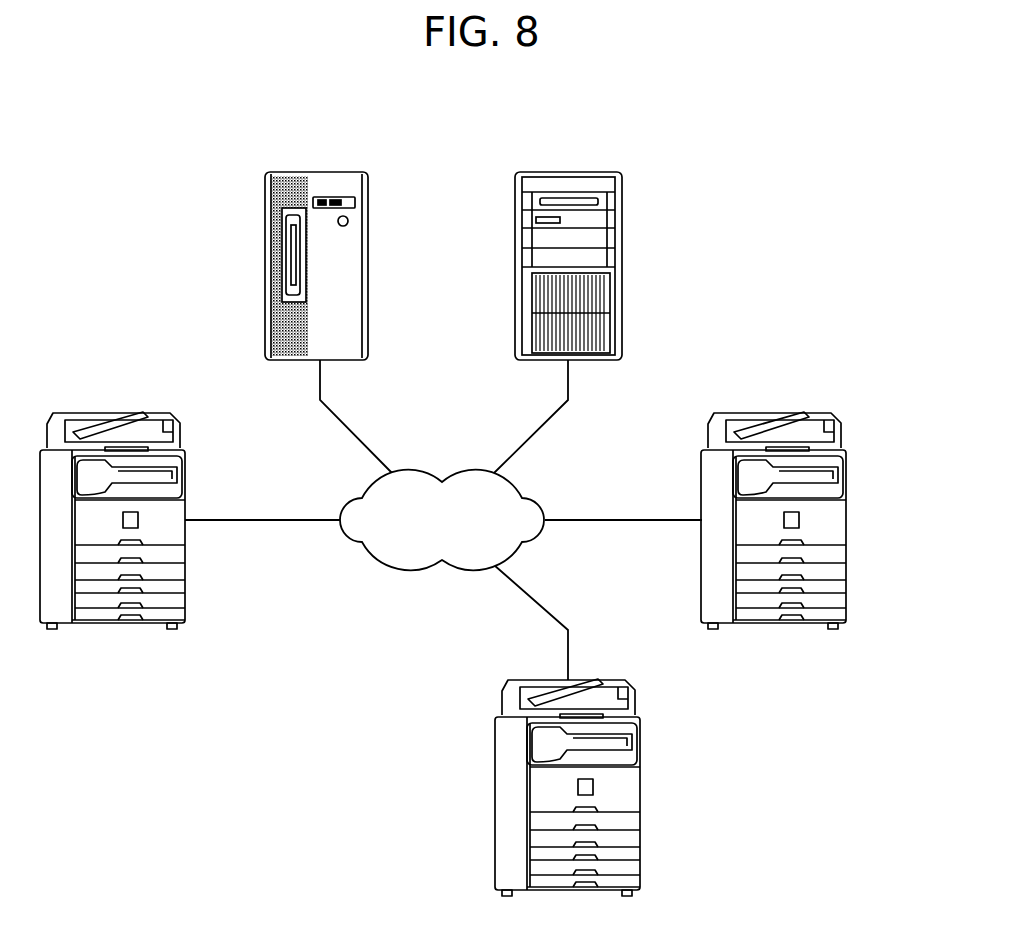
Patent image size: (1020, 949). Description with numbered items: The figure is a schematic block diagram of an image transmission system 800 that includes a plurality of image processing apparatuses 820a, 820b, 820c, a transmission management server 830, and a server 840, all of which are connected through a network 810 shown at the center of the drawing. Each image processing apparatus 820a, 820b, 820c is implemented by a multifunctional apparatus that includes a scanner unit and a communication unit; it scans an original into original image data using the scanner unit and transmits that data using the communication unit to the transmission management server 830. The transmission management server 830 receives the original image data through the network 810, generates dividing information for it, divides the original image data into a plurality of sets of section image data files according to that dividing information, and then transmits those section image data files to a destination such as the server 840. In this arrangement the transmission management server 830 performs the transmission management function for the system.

The image transmission system 800 is at (193, 147).
The network 810 is at (538, 496).
The image processing apparatus 820a is at (186, 475).
The image processing apparatus 820b is at (847, 523).
The image processing apparatus 820c is at (639, 791).
The transmission management server 830 is at (369, 220).
The server 840 is at (622, 220).